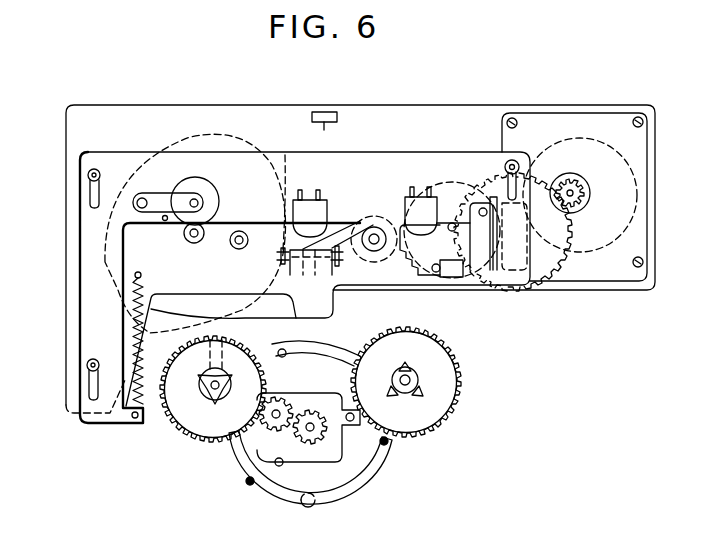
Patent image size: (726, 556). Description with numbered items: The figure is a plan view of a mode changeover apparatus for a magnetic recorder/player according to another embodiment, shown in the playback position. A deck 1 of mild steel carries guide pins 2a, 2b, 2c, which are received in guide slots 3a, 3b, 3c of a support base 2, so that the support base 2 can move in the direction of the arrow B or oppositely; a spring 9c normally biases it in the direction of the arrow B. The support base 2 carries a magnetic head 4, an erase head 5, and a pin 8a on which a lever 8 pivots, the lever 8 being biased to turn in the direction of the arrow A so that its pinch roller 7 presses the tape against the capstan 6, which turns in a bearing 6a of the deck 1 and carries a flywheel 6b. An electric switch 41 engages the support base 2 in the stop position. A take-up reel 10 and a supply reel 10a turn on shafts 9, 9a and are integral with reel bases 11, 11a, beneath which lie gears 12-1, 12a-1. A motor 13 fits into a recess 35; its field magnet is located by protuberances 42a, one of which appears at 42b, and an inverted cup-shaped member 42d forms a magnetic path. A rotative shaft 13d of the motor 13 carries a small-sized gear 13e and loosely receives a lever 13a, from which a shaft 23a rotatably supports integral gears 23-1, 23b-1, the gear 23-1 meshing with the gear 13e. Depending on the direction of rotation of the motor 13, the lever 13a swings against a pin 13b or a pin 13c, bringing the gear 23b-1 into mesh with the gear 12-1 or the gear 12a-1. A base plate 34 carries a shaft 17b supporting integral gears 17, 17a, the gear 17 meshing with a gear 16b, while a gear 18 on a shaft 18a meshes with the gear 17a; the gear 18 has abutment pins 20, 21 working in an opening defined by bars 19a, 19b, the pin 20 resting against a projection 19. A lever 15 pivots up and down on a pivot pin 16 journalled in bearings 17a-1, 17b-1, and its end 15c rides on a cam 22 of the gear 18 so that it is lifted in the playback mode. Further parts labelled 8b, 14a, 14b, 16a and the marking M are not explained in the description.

The deck 1 is at (405, 105).
The support base 2 is at (370, 152).
The guide pin 2a is at (88, 171).
The guide pin 2b is at (86, 364).
The guide pin 2c is at (507, 162).
The guide slot 3a is at (89, 196).
The guide slot 3b is at (88, 380).
The guide slot 3c is at (518, 185).
The magnetic head 4 is at (291, 205).
The erase head 5 is at (433, 220).
The capstan 6 is at (196, 243).
The bearing 6a is at (211, 338).
The flywheel 6b is at (224, 136).
The pinch roller 7 is at (200, 181).
The lever 8 is at (160, 192).
The pin 8a is at (142, 210).
The pin 8b is at (165, 222).
The shaft 9 is at (212, 388).
The shaft 9a is at (418, 380).
The spring 9c is at (141, 370).
The take-up reel 10 is at (209, 374).
The supply reel 10a is at (432, 400).
The reel base 11 is at (168, 420).
The reel base 11a is at (432, 418).
The gear 12-1 is at (195, 434).
The gear 12a-1 is at (447, 360).
The motor 13 is at (347, 473).
The lever 13a is at (340, 475).
The pin 13b is at (365, 418).
The pin 13c is at (278, 467).
The rotative shaft 13d is at (303, 408).
The small-sized gear 13e is at (313, 443).
The pivot hole 14a is at (239, 250).
The lever 14b is at (360, 220).
The lever 15 is at (337, 262).
The end of lever 15c is at (378, 216).
The pivot pin 16 is at (304, 272).
The lever 16a is at (530, 230).
The gear 16b is at (570, 173).
The gear 17 is at (589, 285).
The gear 17a is at (570, 229).
The bearing 17a-1 is at (288, 220).
The shaft 17b is at (540, 285).
The bearing 17b-1 is at (370, 290).
The gear 18 is at (443, 180).
The shaft 18a is at (427, 250).
The projection 19 is at (470, 290).
The bar 19a is at (493, 290).
The bar 19b is at (392, 292).
The abutment pin 20 is at (432, 288).
The abutment pin 21 is at (481, 236).
The cam 22 is at (372, 257).
The gear 23-1 is at (296, 372).
The shaft 23a is at (268, 428).
The gear 23b-1 is at (265, 395).
The base plate 34 is at (655, 245).
The recess 35 is at (622, 150).
The electric switch 41 is at (324, 112).
The protuberance 42a is at (386, 445).
The protuberance 42b is at (308, 508).
The inverted cup-shaped member 42d is at (248, 486).
The arrow A is at (136, 188).
The arrow B is at (51, 220).
The motor M is at (640, 213).